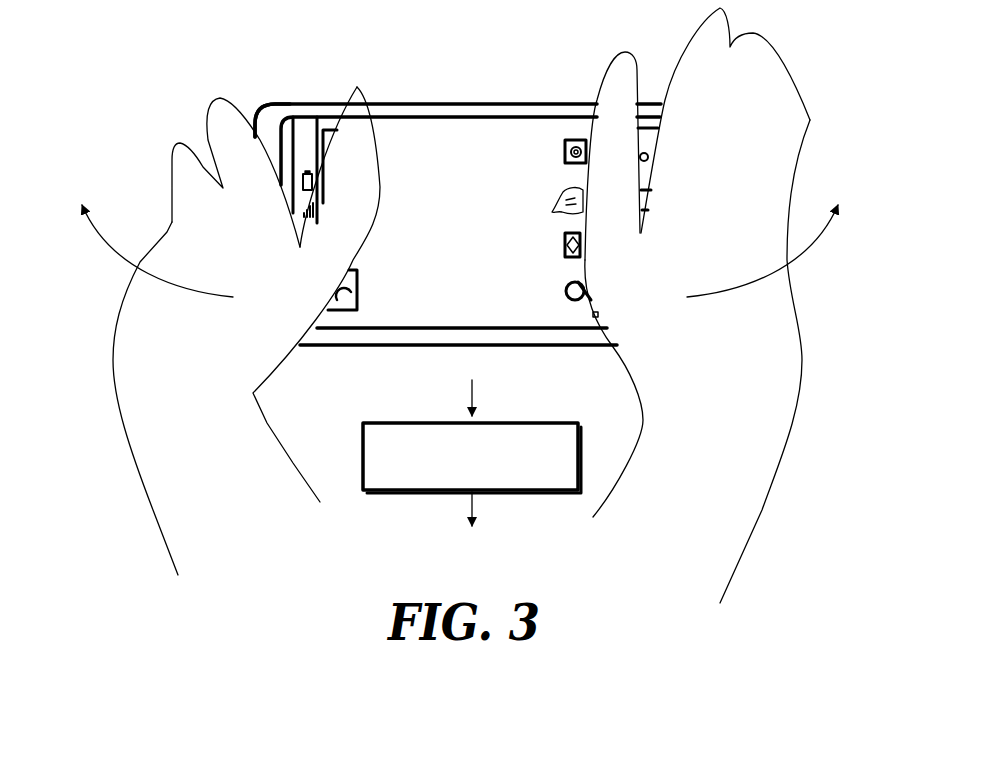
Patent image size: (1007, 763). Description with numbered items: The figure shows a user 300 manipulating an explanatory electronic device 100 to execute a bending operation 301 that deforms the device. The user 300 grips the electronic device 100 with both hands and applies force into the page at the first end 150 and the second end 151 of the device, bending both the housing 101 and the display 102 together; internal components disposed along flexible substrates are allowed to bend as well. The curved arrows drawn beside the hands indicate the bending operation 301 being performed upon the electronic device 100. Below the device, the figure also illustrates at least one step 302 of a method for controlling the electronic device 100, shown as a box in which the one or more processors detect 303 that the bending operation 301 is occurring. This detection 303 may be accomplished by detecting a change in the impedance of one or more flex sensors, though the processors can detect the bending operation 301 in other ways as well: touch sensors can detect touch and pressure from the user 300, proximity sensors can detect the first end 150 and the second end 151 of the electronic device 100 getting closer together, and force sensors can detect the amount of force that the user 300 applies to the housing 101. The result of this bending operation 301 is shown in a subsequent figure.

The electronic device 100 is at (427, 95).
The housing 101 is at (463, 108).
The display 102 is at (520, 137).
The first end 150 is at (257, 101).
The second end 151 is at (653, 96).
The user 300 is at (188, 177).
The bending operation 301 is at (107, 250).
The step 302 is at (363, 455).
The detect 303 is at (430, 433).